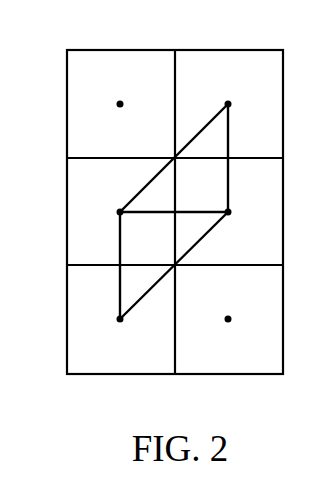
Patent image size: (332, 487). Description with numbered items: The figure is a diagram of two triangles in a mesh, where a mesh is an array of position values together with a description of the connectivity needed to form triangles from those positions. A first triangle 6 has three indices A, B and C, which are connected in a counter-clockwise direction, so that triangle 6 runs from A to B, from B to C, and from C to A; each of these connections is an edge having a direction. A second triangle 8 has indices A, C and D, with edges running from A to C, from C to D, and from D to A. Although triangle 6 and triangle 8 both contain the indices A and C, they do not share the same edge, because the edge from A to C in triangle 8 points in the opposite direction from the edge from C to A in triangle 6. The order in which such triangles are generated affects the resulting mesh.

The triangle 6 is at (198, 128).
The triangle 8 is at (117, 237).
The index A is at (239, 212).
The index B is at (238, 103).
The index C is at (110, 212).
The index D is at (119, 333).